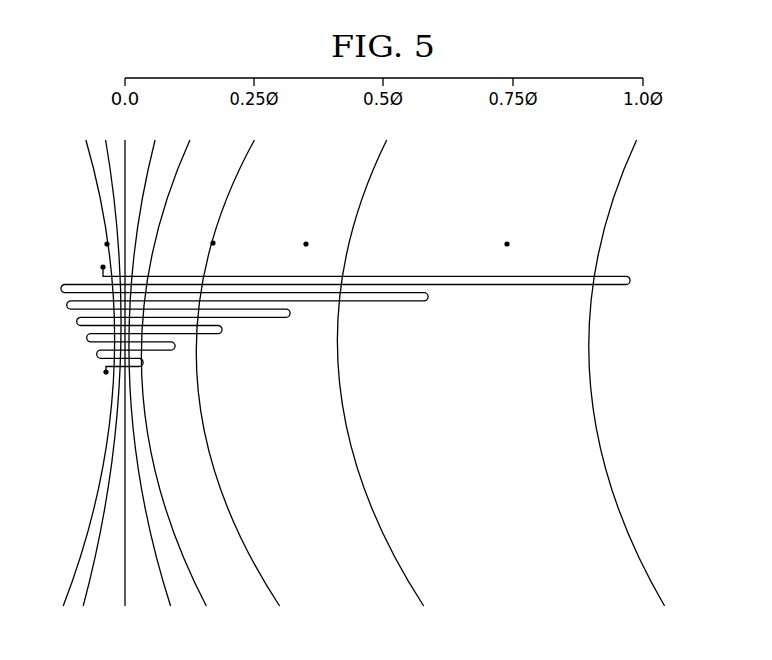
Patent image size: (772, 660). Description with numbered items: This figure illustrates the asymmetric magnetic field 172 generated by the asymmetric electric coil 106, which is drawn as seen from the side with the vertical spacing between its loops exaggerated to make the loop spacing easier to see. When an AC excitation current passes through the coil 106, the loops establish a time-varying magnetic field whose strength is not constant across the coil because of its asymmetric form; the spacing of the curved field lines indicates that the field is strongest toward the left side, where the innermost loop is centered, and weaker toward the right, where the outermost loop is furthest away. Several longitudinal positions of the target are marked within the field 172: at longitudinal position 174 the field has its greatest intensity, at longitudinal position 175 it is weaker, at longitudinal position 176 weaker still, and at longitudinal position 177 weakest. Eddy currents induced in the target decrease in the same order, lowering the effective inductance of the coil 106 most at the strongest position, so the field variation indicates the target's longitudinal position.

The asymmetric electric coil 106 is at (623, 274).
The asymmetric magnetic field 172 is at (664, 448).
The longitudinal position 174 is at (97, 235).
The longitudinal position 175 is at (226, 235).
The longitudinal position 176 is at (313, 229).
The longitudinal position 177 is at (515, 229).